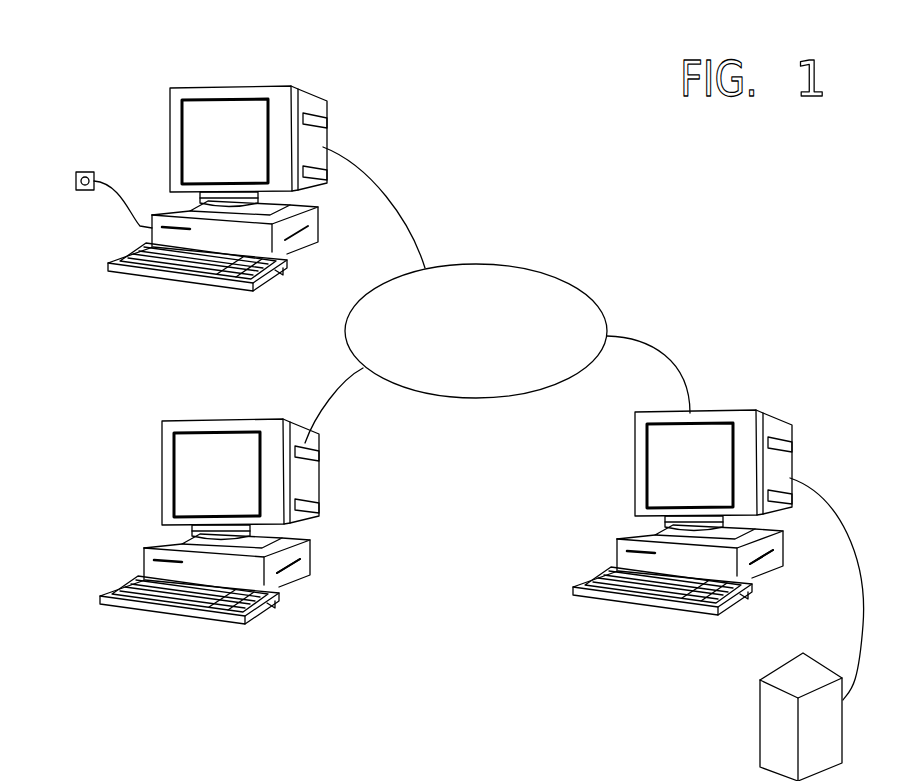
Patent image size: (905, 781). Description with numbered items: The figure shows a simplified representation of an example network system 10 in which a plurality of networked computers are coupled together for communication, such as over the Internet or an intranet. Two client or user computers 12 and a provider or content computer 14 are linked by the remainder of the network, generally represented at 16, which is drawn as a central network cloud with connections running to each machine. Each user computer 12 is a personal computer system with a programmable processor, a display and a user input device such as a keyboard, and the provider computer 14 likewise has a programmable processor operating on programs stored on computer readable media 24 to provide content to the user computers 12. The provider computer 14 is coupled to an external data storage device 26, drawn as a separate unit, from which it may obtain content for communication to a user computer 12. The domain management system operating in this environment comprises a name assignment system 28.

The network system 10 is at (450, 102).
The user computer 12 is at (179, 352).
The provider computer 14 is at (697, 549).
The network 16 is at (532, 266).
The computer readable media 24 is at (782, 589).
The external data storage device 26 is at (760, 725).
The name assignment system 28 is at (321, 768).